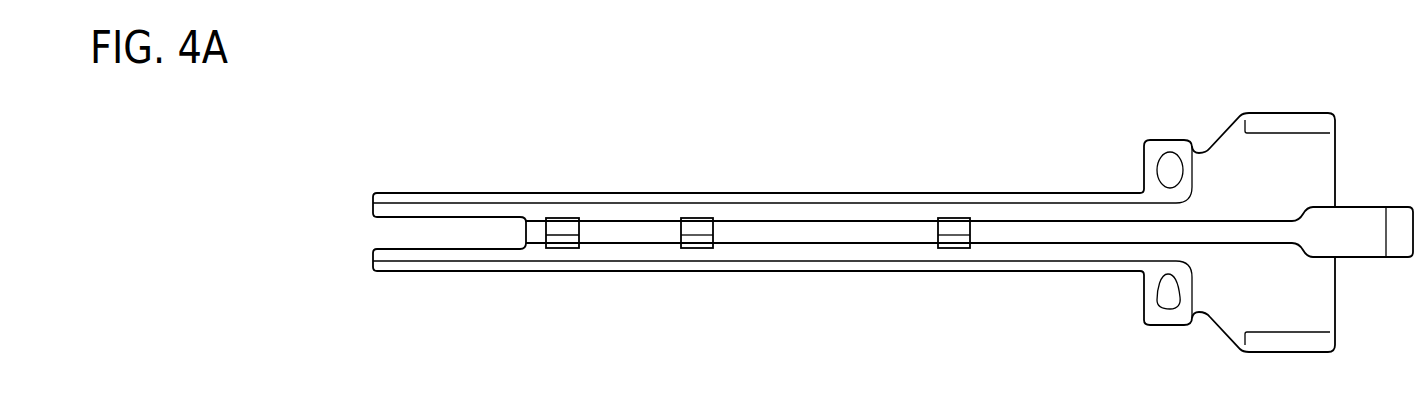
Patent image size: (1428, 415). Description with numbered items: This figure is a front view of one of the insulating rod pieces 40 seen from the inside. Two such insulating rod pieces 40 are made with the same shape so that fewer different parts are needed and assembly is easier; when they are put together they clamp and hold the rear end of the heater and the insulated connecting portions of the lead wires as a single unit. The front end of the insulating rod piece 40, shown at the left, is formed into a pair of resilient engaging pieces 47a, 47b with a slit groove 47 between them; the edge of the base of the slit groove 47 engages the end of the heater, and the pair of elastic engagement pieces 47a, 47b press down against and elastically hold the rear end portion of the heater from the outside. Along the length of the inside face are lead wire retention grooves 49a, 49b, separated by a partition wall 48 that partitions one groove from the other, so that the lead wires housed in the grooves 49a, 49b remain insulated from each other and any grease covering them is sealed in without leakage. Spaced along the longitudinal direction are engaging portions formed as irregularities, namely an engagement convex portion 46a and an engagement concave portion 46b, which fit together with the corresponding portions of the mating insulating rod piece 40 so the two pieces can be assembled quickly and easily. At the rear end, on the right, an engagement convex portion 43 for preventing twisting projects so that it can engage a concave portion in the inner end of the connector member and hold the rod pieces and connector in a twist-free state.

The insulating rod piece 40 is at (815, 283).
The engagement convex portion for preventing twisting 43 is at (1358, 220).
The engagement convex portion 46a is at (693, 223).
The engagement concave portion 46b is at (560, 222).
The slit groove 47 is at (523, 232).
The resilient engaging piece 47a is at (443, 193).
The resilient engaging piece 47b is at (455, 252).
The partition wall 48 is at (1060, 228).
The lead wire retention groove 49a is at (790, 215).
The lead wire retention groove 49b is at (882, 252).